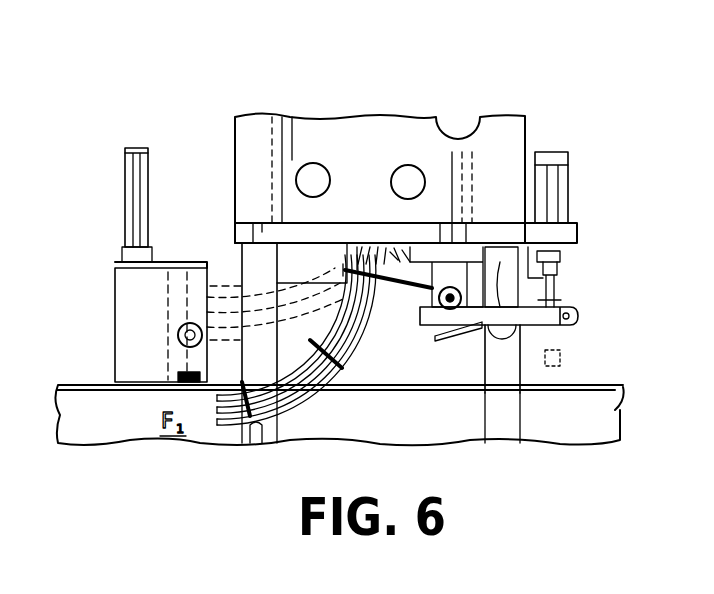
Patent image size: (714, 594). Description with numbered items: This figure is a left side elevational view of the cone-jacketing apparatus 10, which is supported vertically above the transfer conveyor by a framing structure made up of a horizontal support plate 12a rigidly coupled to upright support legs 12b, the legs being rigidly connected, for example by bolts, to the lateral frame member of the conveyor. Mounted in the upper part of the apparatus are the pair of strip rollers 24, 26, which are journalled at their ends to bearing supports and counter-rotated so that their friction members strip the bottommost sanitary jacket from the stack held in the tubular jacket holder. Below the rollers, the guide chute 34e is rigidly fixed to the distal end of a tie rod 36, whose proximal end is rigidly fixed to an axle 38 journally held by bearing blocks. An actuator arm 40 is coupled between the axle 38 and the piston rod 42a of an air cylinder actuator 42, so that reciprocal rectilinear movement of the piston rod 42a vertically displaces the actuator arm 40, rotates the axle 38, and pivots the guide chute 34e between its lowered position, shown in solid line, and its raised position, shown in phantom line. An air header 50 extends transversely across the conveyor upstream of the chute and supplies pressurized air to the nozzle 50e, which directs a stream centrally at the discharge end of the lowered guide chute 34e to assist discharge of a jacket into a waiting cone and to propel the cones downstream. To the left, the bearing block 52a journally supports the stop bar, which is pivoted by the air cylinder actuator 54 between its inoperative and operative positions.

The jacketing apparatus 10 is at (607, 79).
The horizontal support plate 12a is at (338, 232).
The upright support legs 12b is at (252, 262).
The strip roller 24 is at (322, 170).
The strip roller 26 is at (397, 167).
The guide chute 34e is at (288, 405).
The tie rod 36 is at (432, 292).
The axle 38 is at (432, 314).
The actuator arm 40 is at (507, 270).
The air cylinder actuator 42 is at (558, 158).
The piston rod 42a is at (556, 276).
The air header 50 is at (523, 327).
The nozzle 50e is at (446, 337).
The bearing block 52a is at (178, 340).
The air cylinder actuator 54 is at (135, 198).